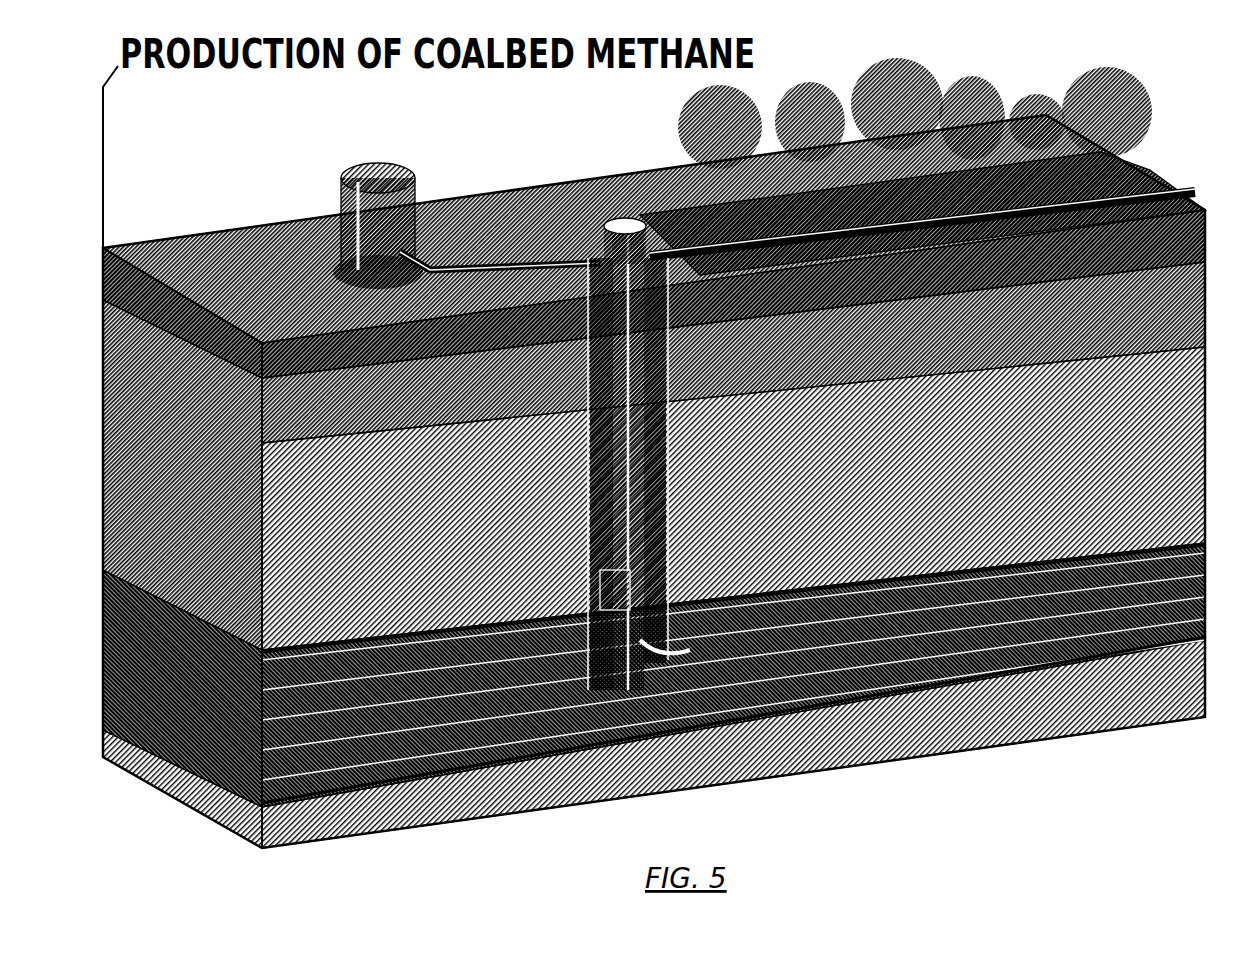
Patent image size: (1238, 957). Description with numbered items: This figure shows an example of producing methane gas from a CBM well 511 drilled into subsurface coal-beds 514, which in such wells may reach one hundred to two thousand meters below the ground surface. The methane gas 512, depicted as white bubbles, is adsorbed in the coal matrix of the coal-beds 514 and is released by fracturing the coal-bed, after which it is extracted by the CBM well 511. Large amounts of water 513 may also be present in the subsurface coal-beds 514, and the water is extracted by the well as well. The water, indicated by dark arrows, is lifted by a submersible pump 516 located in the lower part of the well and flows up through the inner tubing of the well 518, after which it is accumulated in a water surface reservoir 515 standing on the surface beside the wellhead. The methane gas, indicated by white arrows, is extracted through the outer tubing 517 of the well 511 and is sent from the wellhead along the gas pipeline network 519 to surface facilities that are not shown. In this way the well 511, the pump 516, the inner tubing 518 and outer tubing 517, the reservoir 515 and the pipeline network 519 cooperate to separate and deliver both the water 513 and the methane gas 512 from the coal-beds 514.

The CBM well 511 is at (593, 206).
The methane gas 512 is at (711, 594).
The water 513 is at (500, 474).
The subsurface coal-beds 514 is at (654, 645).
The water surface reservoir 515 is at (336, 210).
The submersible pump 516 is at (557, 572).
The production well pipe 517 is at (703, 460).
The inner tubing of the well 518 is at (558, 461).
The gas pipeline network 519 is at (922, 250).